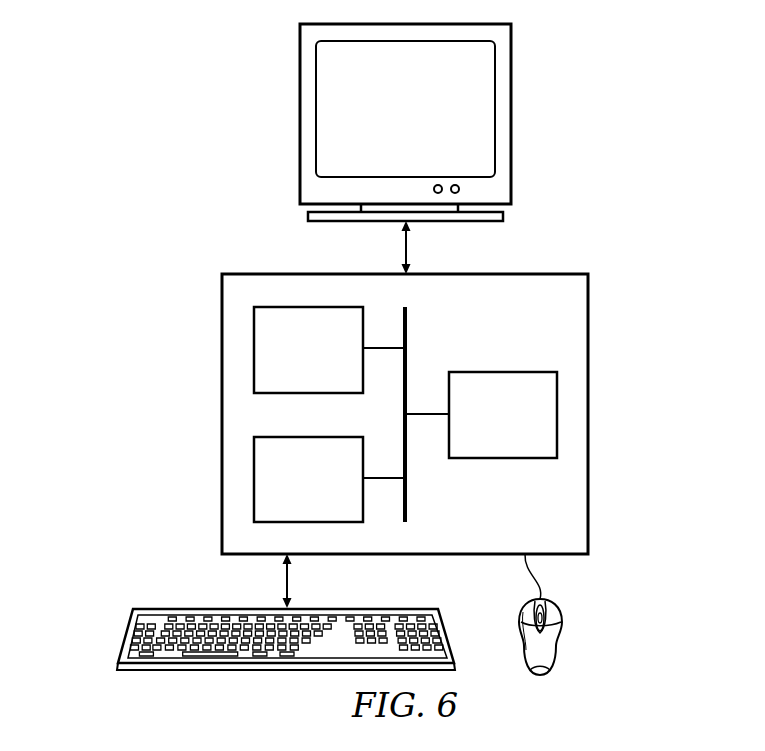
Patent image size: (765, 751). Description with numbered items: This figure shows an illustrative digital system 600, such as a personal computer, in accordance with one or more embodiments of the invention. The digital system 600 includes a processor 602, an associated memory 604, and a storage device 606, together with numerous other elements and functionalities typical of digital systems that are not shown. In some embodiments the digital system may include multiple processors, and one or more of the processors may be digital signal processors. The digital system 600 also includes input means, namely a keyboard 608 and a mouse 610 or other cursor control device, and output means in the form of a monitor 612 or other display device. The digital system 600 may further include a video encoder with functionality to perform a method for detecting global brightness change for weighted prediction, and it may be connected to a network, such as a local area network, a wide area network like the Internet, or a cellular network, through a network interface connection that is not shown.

The digital system 600 is at (185, 109).
The processor 602 is at (484, 427).
The memory 604 is at (289, 363).
The storage device 606 is at (289, 492).
The keyboard 608 is at (124, 638).
The mouse 610 is at (562, 640).
The monitor 612 is at (511, 113).